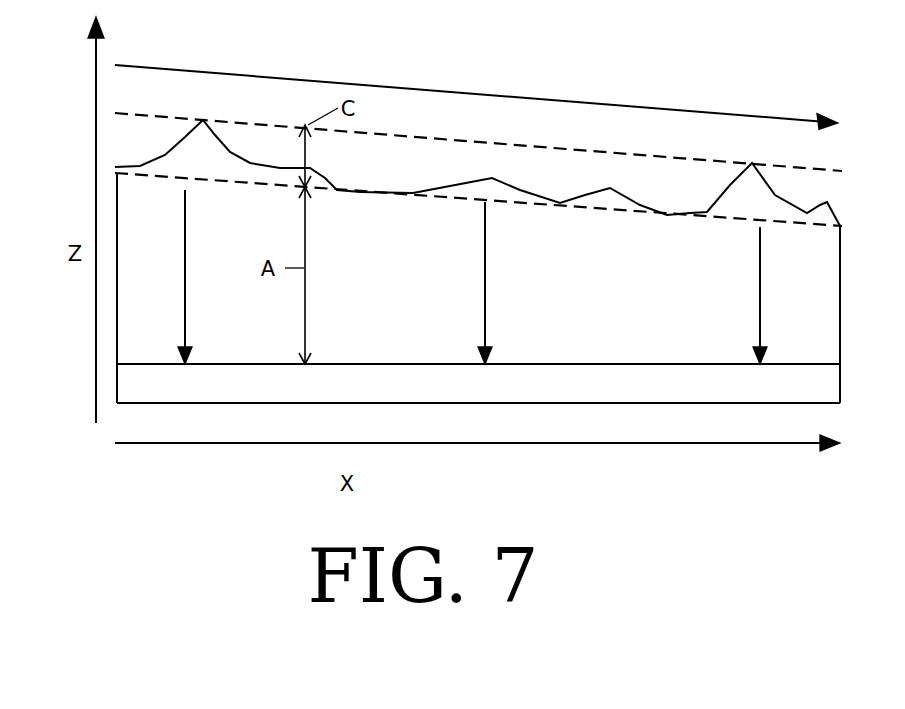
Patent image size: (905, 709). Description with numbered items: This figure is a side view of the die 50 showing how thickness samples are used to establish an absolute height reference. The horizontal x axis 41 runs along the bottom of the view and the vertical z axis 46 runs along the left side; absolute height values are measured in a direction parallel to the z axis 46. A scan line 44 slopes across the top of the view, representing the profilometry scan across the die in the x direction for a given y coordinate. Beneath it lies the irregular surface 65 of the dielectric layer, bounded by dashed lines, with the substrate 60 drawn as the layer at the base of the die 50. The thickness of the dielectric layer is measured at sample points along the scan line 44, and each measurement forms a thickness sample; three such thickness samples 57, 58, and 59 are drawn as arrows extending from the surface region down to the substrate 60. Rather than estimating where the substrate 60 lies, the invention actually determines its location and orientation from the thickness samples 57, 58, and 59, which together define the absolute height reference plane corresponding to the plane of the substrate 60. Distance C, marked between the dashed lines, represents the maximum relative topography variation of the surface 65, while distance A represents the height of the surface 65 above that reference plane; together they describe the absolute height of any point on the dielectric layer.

The x axis 41 is at (525, 443).
The scan line 44 is at (405, 88).
The z axis 46 is at (96, 85).
The die 50 is at (478, 261).
The thickness sample 57 is at (184, 268).
The thickness sample 58 is at (484, 280).
The thickness sample 59 is at (759, 290).
The substrate 60 is at (478, 387).
The surface 65 is at (543, 146).